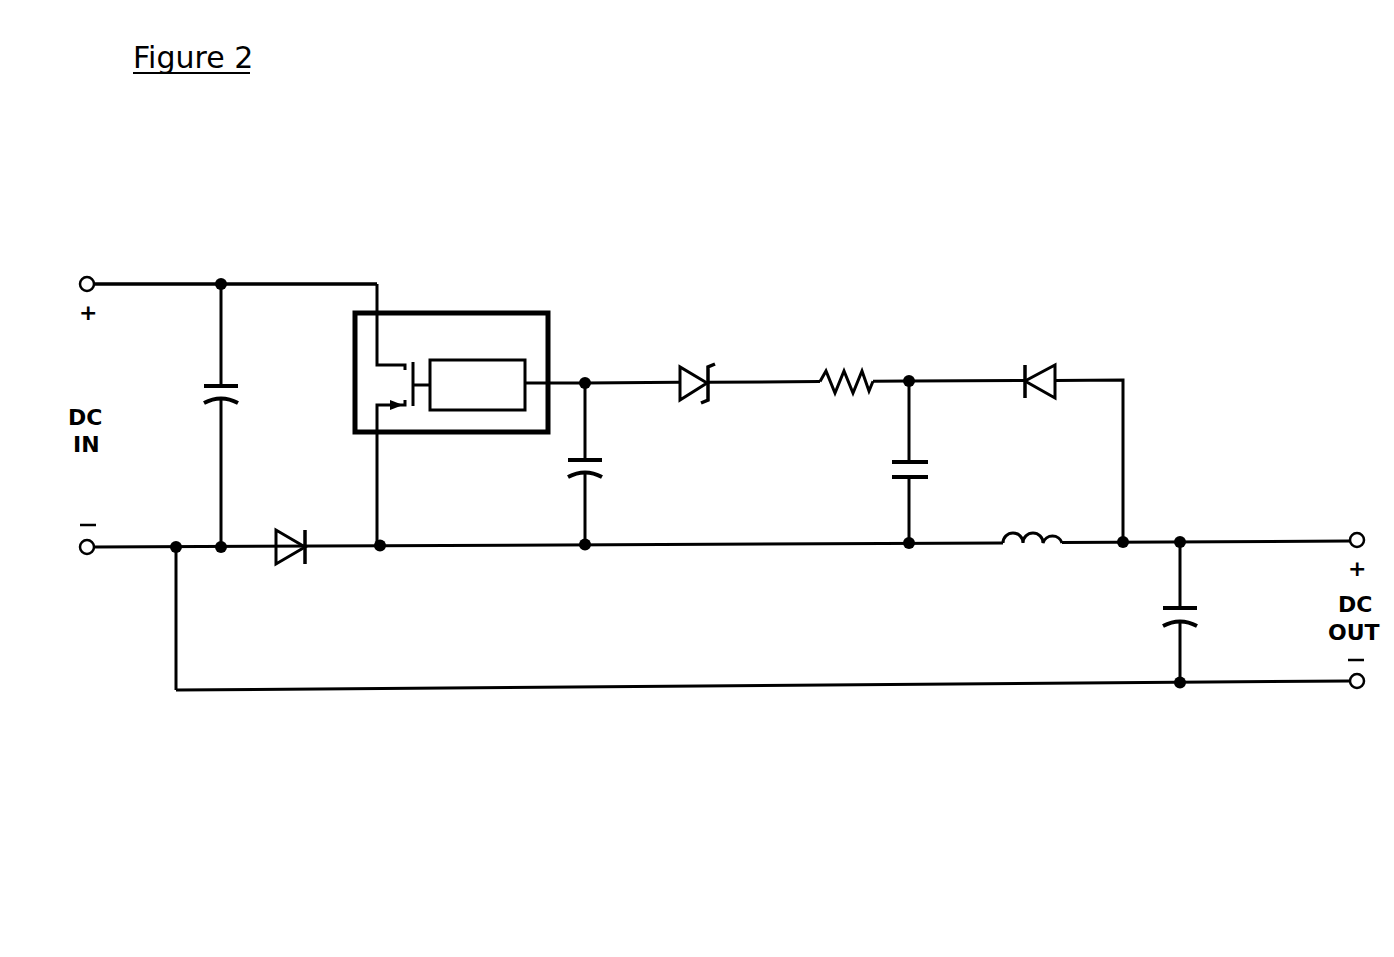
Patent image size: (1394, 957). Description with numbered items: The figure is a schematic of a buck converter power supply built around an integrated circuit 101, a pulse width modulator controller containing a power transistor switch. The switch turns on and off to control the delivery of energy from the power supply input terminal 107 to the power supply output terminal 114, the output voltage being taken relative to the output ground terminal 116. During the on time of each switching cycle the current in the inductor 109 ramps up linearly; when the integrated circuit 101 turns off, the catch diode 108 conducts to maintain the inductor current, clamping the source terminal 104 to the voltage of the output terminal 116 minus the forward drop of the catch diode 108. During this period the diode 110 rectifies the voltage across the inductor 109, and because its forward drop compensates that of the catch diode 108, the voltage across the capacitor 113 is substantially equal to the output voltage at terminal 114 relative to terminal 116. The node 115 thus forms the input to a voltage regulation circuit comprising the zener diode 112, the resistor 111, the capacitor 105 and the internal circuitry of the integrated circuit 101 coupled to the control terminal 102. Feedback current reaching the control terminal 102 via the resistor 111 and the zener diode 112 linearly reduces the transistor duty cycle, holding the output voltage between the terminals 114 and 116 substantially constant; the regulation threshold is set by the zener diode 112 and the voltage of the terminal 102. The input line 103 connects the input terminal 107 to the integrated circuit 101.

The integrated circuit 101 is at (458, 278).
The control terminal 102 is at (583, 368).
The input supply line 103 is at (292, 278).
The source terminal 104 is at (395, 563).
The capacitor 105 is at (562, 468).
The power supply input terminal 107 is at (100, 276).
The catch diode 108 is at (293, 572).
The inductor 109 is at (1036, 556).
The diode 110 is at (1064, 356).
The resistor 111 is at (845, 364).
The zener diode 112 is at (703, 360).
The capacitor 113 is at (882, 470).
The power supply output terminal 114 is at (1346, 528).
The node 115 is at (921, 372).
The output terminal 116 is at (1347, 697).